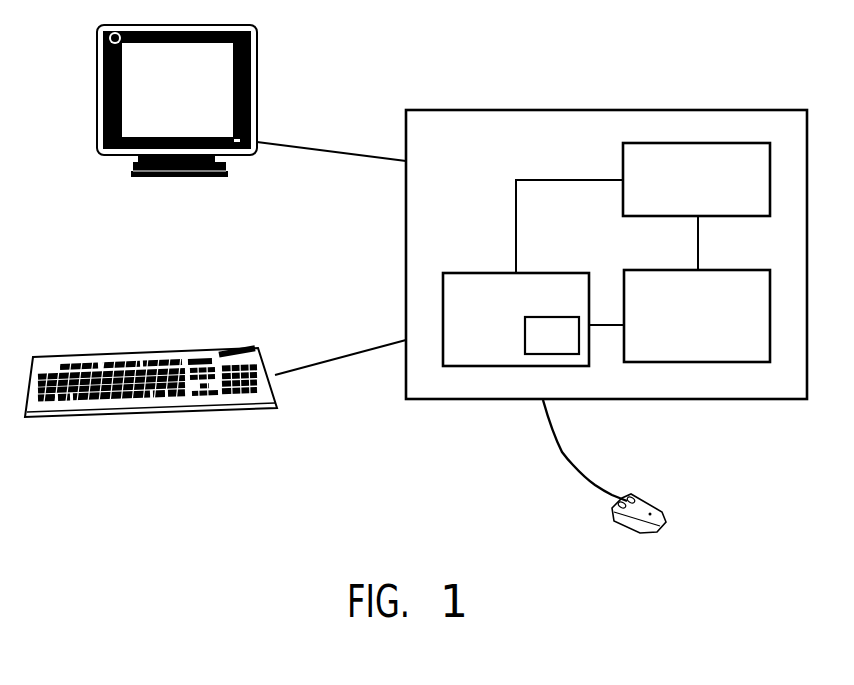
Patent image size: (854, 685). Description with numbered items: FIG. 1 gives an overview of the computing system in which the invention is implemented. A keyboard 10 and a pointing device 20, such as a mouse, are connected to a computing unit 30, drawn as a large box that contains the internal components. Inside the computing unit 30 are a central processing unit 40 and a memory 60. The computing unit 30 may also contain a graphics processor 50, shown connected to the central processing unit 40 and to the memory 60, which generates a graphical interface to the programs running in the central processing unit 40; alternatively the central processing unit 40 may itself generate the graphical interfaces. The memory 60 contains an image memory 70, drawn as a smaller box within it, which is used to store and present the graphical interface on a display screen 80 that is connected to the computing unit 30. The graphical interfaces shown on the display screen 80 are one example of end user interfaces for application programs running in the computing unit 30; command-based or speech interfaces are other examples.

The keyboard 10 is at (113, 353).
The pointing device 20 is at (656, 503).
The computing unit 30 is at (466, 160).
The central processing unit 40 is at (714, 183).
The graphics processor 50 is at (721, 316).
The memory 60 is at (491, 308).
The image memory 70 is at (552, 335).
The display screen 80 is at (258, 66).